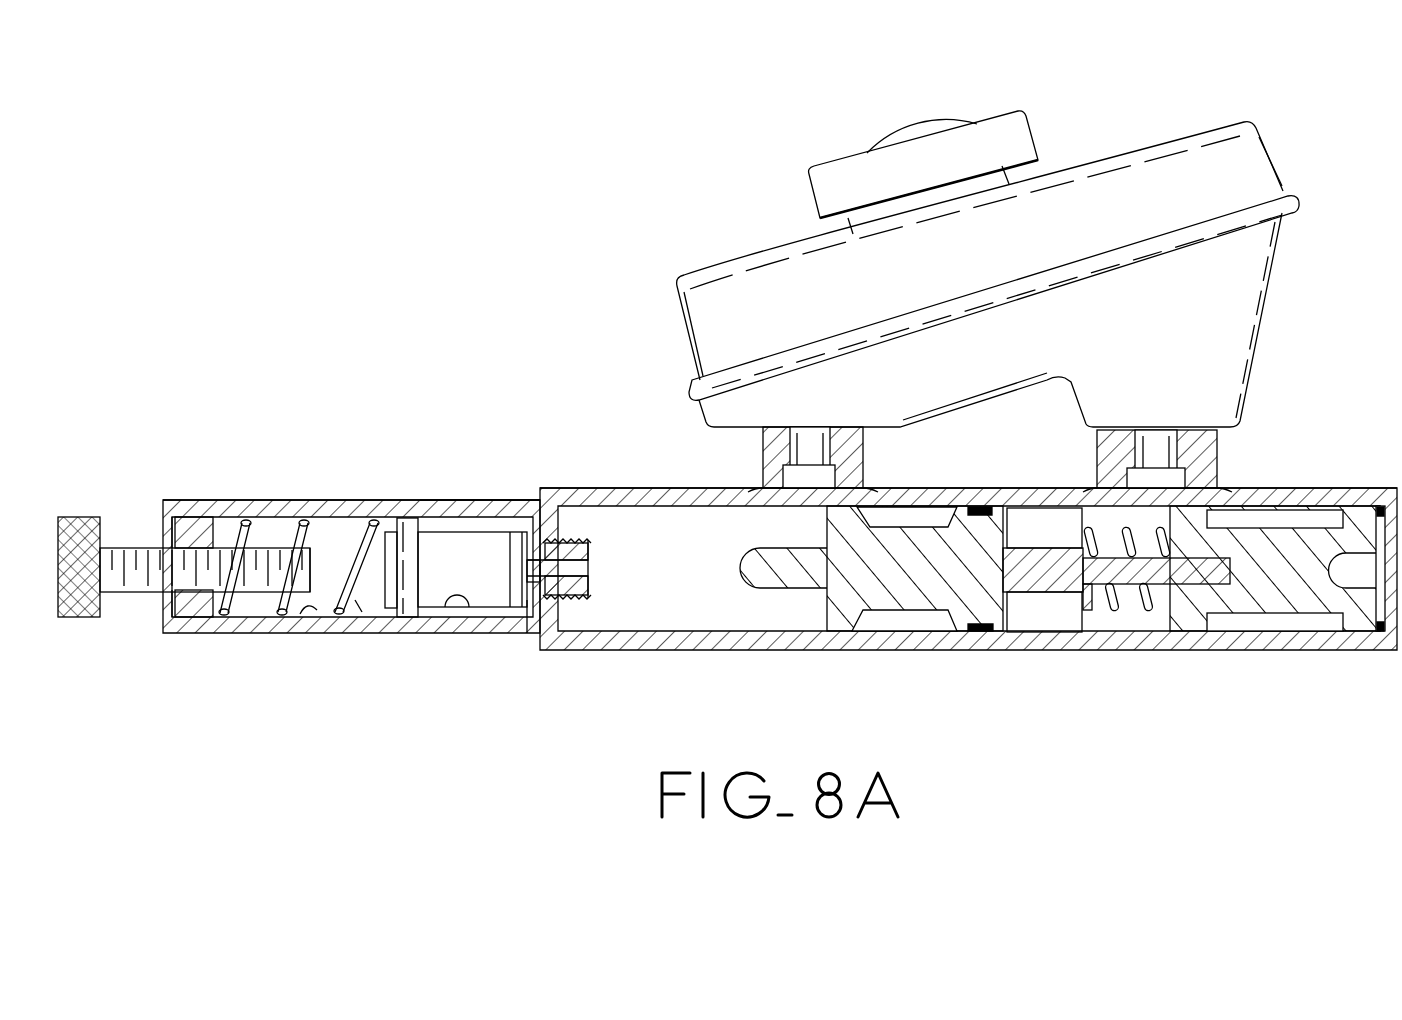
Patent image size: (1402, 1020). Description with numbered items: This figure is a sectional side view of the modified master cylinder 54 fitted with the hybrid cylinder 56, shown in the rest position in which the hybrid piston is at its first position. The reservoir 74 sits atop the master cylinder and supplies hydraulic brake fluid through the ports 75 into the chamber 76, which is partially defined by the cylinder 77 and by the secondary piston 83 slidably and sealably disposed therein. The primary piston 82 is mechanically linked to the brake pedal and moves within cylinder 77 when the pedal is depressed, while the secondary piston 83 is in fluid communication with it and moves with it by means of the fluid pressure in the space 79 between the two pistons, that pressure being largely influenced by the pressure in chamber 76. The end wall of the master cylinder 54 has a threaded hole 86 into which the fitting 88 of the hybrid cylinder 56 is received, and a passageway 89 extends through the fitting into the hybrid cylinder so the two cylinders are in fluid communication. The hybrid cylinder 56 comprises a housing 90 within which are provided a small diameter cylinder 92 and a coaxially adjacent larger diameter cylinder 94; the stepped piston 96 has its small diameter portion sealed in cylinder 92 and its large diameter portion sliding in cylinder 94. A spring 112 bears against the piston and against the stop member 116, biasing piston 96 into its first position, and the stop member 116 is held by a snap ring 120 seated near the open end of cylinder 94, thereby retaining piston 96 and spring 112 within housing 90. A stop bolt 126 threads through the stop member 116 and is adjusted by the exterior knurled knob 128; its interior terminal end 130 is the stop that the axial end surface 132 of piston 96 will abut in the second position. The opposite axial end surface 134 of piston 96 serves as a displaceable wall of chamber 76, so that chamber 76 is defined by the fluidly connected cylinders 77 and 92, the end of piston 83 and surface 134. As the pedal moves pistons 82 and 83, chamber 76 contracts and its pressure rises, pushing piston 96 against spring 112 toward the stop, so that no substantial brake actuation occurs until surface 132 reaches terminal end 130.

The modified master cylinder 54 is at (634, 414).
The hybrid cylinder 56 is at (290, 423).
The reservoir 74 is at (692, 300).
The ports 75 is at (824, 500).
The chamber 76 is at (663, 597).
The cylinder 77 is at (905, 500).
The space 79 is at (1058, 606).
The primary piston 82 is at (1287, 606).
The secondary piston 83 is at (905, 602).
The threaded hole 86 is at (565, 545).
The fitting 88 is at (574, 548).
The passageway 89 is at (575, 570).
The housing 90 is at (497, 506).
The small diameter cylinder 92 is at (463, 607).
The larger diameter cylinder 94 is at (312, 617).
The piston 96 is at (457, 547).
The spring 112 is at (352, 606).
The stop member 116 is at (205, 618).
The snap ring 120 is at (165, 503).
The stop bolt 126 is at (123, 594).
The knurled knob 128 is at (78, 516).
The terminal end 130 is at (312, 550).
The axial end surface 132 is at (385, 560).
The axial end surface 134 is at (527, 622).